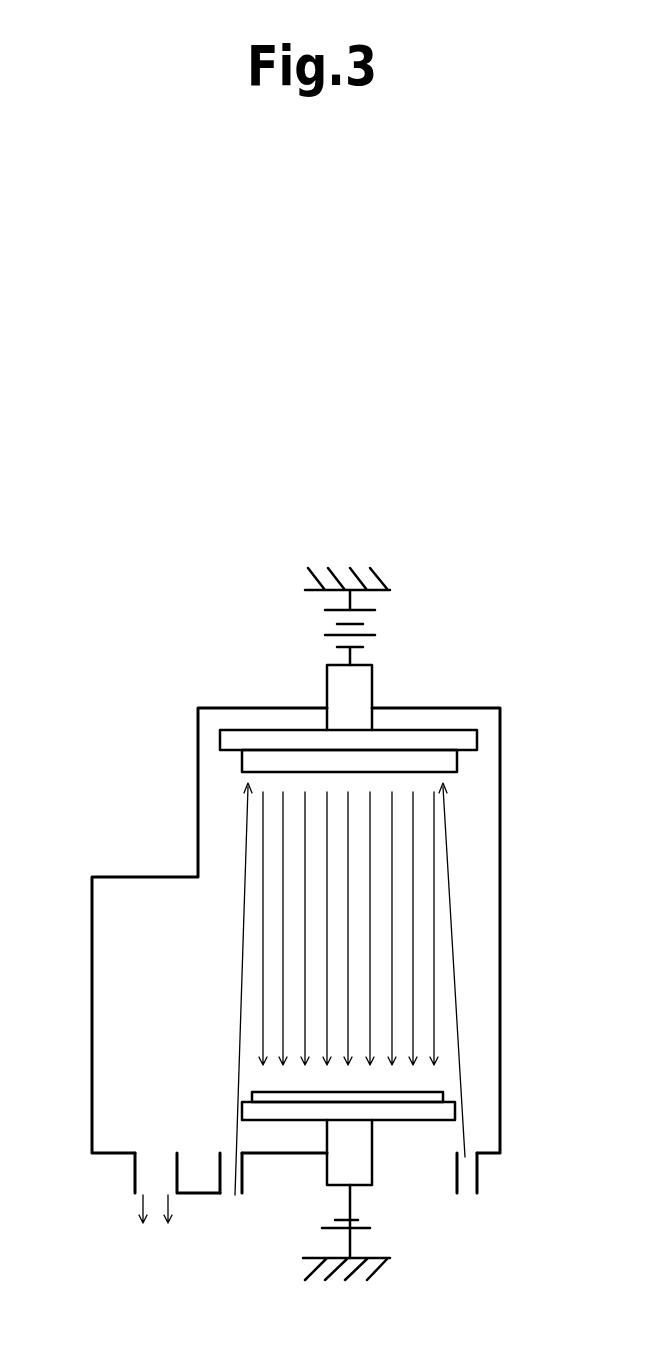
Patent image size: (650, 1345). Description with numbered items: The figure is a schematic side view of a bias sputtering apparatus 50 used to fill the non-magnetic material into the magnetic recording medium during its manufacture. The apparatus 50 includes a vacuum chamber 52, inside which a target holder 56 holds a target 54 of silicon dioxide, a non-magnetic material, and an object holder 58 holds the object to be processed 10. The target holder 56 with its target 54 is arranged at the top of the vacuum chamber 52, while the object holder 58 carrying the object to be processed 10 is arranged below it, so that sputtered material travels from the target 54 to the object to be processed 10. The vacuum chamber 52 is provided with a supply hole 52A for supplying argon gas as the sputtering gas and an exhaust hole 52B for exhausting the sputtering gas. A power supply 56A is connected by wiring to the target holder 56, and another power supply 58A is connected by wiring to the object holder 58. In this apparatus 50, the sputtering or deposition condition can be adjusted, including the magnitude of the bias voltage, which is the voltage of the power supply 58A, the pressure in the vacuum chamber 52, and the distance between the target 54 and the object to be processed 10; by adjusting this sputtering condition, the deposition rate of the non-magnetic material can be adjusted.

The bias sputtering apparatus 50 is at (390, 475).
The vacuum chamber 52 is at (500, 900).
The supply hole 52A is at (232, 1195).
The exhaust hole 52B is at (137, 1198).
The target 54 is at (243, 762).
The target holder 56 is at (220, 735).
The power supply 56A is at (373, 636).
The object holder 58 is at (243, 1118).
The power supply 58A is at (368, 1228).
The object to be processed 10 is at (252, 1093).